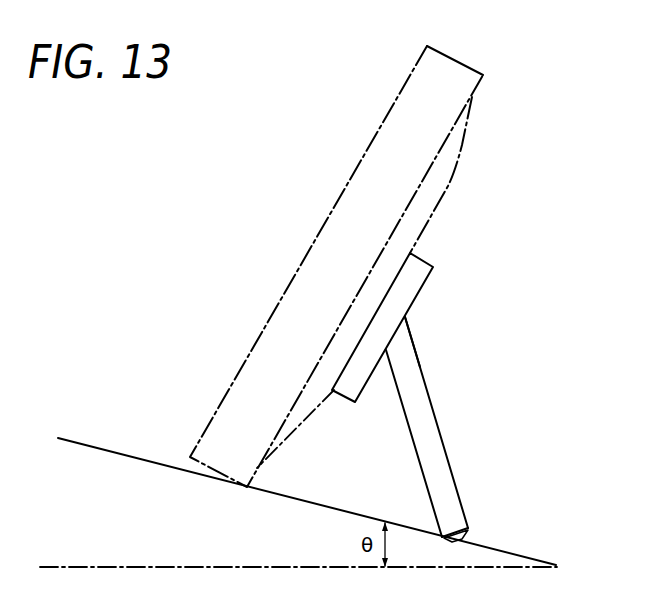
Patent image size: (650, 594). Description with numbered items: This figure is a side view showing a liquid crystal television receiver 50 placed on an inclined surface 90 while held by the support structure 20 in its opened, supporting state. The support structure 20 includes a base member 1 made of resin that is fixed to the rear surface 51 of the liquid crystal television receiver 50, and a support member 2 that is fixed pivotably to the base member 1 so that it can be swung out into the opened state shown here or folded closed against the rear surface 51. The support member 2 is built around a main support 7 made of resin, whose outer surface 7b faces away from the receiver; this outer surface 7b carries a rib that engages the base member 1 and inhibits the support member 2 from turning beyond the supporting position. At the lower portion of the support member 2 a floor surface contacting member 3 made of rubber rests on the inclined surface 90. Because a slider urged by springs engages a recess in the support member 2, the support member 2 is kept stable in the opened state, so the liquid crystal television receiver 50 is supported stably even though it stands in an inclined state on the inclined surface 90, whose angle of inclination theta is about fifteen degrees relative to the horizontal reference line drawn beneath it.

The base member 1 is at (415, 275).
The support member 2 is at (468, 434).
The floor surface contacting member 3 is at (460, 542).
The main support 7 is at (415, 416).
The outer surface 7b is at (417, 360).
The support structure 20 is at (441, 402).
The liquid crystal television receiver 50 is at (321, 228).
The rear surface 51 is at (433, 218).
The inclined surface 90 is at (78, 440).